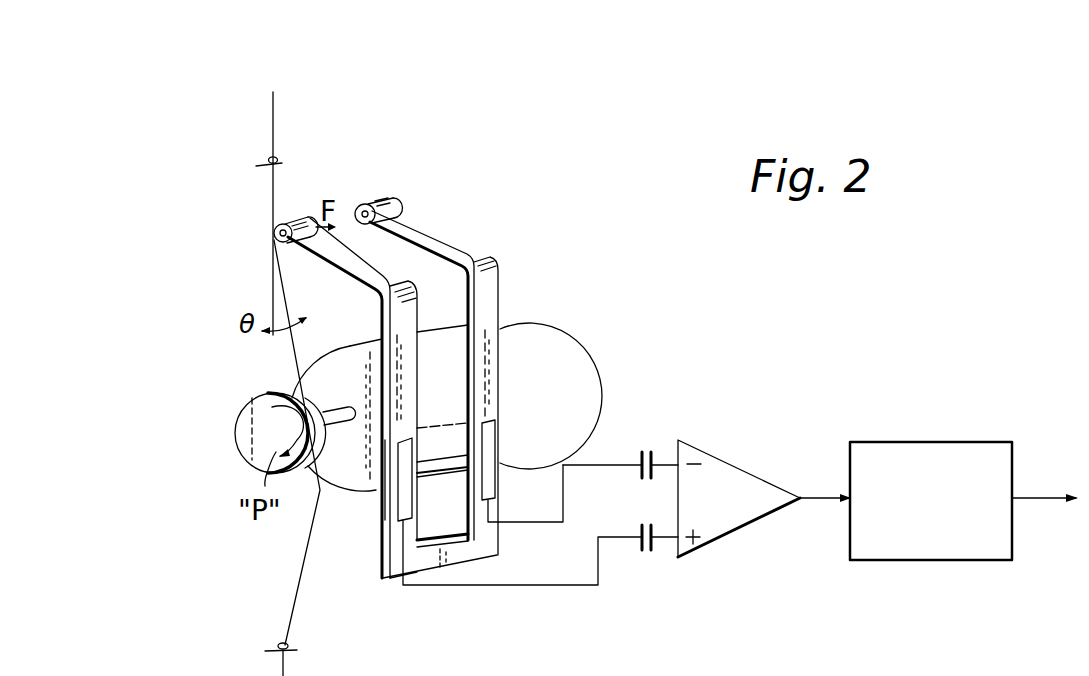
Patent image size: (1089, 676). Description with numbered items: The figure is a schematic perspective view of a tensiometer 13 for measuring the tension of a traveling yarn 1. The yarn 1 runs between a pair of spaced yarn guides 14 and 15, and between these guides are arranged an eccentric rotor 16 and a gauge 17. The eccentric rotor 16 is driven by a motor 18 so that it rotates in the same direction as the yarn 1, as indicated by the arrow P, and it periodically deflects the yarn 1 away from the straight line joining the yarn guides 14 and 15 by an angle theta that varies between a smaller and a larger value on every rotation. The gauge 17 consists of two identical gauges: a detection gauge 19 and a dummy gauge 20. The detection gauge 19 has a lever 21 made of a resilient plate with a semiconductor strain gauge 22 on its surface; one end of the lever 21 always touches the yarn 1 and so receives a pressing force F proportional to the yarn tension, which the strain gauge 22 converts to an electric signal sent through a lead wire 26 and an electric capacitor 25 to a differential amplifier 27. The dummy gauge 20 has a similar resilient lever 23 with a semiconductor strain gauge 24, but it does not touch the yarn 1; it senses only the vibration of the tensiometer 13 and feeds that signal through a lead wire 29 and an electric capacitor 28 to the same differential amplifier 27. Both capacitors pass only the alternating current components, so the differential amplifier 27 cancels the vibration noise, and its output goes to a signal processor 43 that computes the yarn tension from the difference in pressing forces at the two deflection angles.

The traveling yarn 1 is at (282, 121).
The tensiometer 13 is at (231, 602).
The yarn guide 14 is at (261, 167).
The yarn guide 15 is at (273, 649).
The eccentric rotor 16 is at (239, 453).
The gauge 17 is at (513, 299).
The motor 18 is at (542, 377).
The detection gauge 19 is at (340, 277).
The dummy gauge 20 is at (452, 231).
The lever 21 is at (382, 497).
The semiconductor strain gauge 22 is at (397, 521).
The lever 23 is at (503, 504).
The semiconductor strain gauge 24 is at (494, 475).
The electric capacitor 25 is at (648, 554).
The lead wire 26 is at (528, 583).
The differential amplifier 27 is at (741, 469).
The electric capacitor 28 is at (649, 443).
The lead wire 29 is at (602, 467).
The signal processor 43 is at (921, 442).